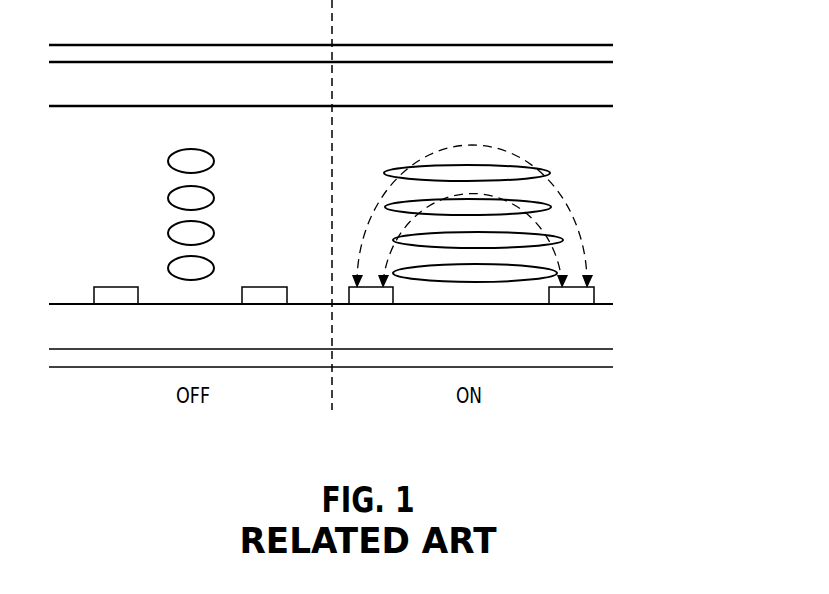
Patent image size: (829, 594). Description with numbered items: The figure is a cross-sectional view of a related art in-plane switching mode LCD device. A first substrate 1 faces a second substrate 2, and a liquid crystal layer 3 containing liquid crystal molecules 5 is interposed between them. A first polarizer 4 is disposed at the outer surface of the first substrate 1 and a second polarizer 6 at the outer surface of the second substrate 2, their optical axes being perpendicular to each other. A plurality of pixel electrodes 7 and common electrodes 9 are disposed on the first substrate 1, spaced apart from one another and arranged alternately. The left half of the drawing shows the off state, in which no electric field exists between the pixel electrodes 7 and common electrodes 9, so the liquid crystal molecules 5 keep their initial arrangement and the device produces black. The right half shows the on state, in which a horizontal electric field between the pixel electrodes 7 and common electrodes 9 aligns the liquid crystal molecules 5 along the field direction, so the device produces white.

The first substrate 1 is at (611, 343).
The second substrate 2 is at (611, 98).
The liquid crystal layer 3 is at (420, 209).
The first polarizer 4 is at (593, 358).
The liquid crystal molecules 5 is at (216, 158).
The second polarizer 6 is at (593, 53).
The pixel electrodes 7 is at (116, 298).
The common electrodes 9 is at (265, 298).